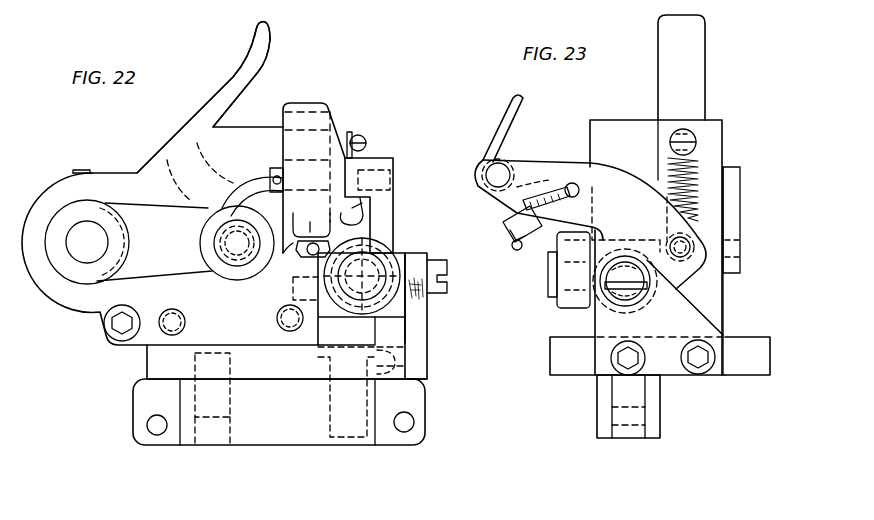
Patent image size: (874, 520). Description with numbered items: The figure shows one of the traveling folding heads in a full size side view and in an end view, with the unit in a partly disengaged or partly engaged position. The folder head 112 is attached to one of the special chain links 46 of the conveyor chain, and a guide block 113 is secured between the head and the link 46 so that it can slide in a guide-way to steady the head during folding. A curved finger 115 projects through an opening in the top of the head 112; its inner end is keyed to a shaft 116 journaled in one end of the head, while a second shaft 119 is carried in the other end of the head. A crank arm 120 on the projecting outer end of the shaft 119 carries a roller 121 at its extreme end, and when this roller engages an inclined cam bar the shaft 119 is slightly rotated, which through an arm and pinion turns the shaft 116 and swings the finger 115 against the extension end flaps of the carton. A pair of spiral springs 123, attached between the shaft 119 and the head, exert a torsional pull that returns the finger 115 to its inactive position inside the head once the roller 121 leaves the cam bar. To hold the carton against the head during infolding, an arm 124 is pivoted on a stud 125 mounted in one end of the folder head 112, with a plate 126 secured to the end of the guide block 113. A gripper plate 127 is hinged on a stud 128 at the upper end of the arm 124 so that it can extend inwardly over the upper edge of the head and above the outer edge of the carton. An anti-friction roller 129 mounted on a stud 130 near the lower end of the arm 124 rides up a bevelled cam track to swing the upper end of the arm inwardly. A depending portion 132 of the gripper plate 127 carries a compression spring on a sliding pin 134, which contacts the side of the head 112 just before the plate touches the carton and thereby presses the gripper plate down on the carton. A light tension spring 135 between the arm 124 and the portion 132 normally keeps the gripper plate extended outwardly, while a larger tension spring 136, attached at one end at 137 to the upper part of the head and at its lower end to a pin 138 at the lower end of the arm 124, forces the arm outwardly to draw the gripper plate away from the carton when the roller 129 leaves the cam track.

In FIG. 22, the special chain link 46 is at (300, 442).
In FIG. 23, the special chain link 46 is at (600, 427).
In FIG. 22, the folder head 112 is at (127, 182).
In FIG. 23, the folder head 112 is at (712, 128).
In FIG. 22, the guide block 113 is at (155, 362).
In FIG. 23, the guide block 113 is at (568, 372).
In FIG. 22, the curved finger 115 is at (268, 45).
In FIG. 23, the curved finger 115 is at (700, 27).
In FIG. 22, the shaft 116 is at (263, 200).
In FIG. 22, the shaft 119 is at (80, 258).
In FIG. 22, the crank arm 120 is at (152, 270).
In FIG. 22, the roller 121 is at (228, 268).
In FIG. 22, the spiral springs 123 is at (88, 172).
In FIG. 22, the arm 124 is at (390, 207).
In FIG. 22, the stud 125 is at (443, 298).
In FIG. 23, the stud 125 is at (633, 300).
In FIG. 22, the plate 126 is at (418, 337).
In FIG. 23, the plate 126 is at (702, 322).
In FIG. 22, the gripper plate 127 is at (325, 112).
In FIG. 23, the gripper plate 127 is at (507, 110).
In FIG. 22, the stud 128 is at (273, 168).
In FIG. 23, the stud 128 is at (493, 167).
In FIG. 22, the anti-friction roller 129 is at (387, 247).
In FIG. 23, the anti-friction roller 129 is at (570, 305).
In FIG. 22, the stud 130 is at (368, 282).
In FIG. 23, the stud 130 is at (552, 280).
In FIG. 22, the depending portion 132 is at (318, 255).
In FIG. 22, the sliding pin 134 is at (310, 245).
In FIG. 23, the sliding pin 134 is at (527, 250).
In FIG. 22, the light tension spring 135 is at (362, 215).
In FIG. 23, the light tension spring 135 is at (525, 220).
In FIG. 22, the tension spring 136 is at (365, 138).
In FIG. 23, the tension spring 136 is at (698, 165).
In FIG. 22, the attachment point 137 is at (360, 135).
In FIG. 23, the attachment point 137 is at (695, 142).
In FIG. 23, the pin 138 is at (690, 247).